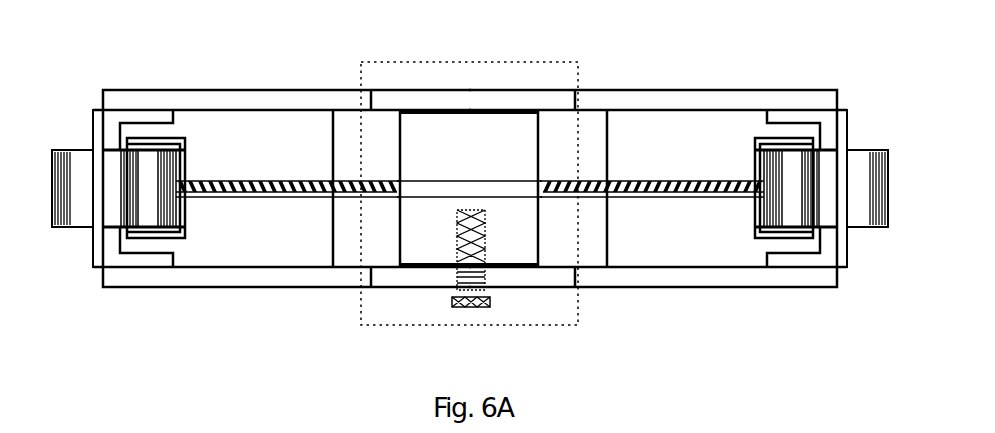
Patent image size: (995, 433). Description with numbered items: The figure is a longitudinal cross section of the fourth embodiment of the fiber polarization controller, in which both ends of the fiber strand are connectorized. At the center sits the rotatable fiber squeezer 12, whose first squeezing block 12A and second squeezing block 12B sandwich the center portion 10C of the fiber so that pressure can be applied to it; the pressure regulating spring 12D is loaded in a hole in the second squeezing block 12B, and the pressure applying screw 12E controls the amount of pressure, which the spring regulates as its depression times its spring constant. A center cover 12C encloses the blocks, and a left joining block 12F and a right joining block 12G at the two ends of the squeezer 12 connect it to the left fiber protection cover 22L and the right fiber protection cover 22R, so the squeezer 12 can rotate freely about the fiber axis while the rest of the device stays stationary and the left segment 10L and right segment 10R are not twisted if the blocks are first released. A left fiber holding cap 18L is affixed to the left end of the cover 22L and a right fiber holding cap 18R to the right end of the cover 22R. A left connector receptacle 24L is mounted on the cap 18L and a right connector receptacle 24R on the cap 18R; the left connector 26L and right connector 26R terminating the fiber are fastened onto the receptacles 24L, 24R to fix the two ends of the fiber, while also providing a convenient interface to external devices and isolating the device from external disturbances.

The center portion of fiber strand 10C is at (482, 180).
The left segment of fiber strand 10L is at (228, 193).
The right segment of fiber strand 10R is at (692, 195).
The rotatable fiber squeezer 12 is at (585, 312).
The first squeezing block 12A is at (440, 125).
The second squeezing block 12B is at (522, 257).
The center cover 12C is at (538, 98).
The pressure regulating spring 12D is at (482, 224).
The pressure applying screw 12E is at (493, 302).
The left joining block 12F is at (345, 243).
The right joining block 12G is at (595, 242).
The left fiber holding cap 18L is at (107, 250).
The right fiber holding cap 18R is at (833, 247).
The left fiber protection cover 22L is at (238, 98).
The right fiber protection cover 22R is at (718, 97).
The left connector receptacle 24L is at (68, 140).
The right connector receptacle 24R is at (872, 137).
The left connector 26L is at (190, 165).
The right connector 26R is at (745, 163).